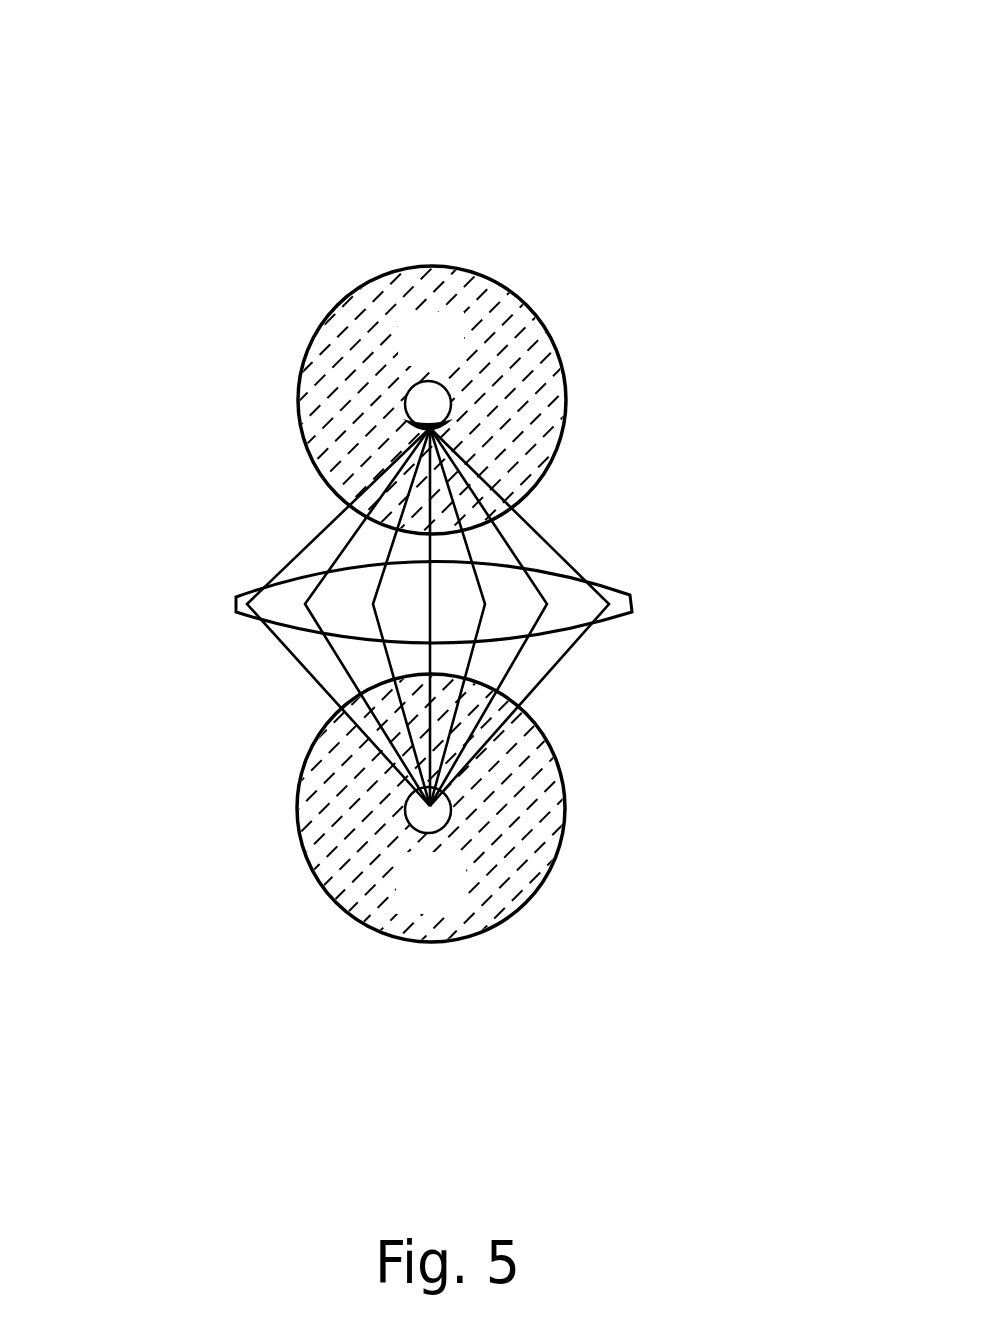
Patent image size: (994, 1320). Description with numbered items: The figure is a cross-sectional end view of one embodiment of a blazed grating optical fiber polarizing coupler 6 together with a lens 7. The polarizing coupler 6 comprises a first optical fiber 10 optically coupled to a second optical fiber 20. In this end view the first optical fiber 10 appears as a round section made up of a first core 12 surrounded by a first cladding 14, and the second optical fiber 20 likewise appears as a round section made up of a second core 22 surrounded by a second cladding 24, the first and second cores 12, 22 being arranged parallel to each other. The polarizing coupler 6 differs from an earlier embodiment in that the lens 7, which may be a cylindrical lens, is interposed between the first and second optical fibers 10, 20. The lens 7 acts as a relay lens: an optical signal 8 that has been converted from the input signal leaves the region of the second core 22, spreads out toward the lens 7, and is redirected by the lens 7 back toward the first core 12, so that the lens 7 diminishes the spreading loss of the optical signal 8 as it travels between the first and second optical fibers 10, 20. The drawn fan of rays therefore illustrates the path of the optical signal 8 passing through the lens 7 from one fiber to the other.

The polarizing coupler 6 is at (282, 118).
The lens 7 is at (632, 613).
The optical signal 8 is at (203, 435).
The first optical fiber 10 is at (431, 895).
The first core 12 is at (440, 815).
The first cladding 14 is at (431, 808).
The second optical fiber 20 is at (432, 318).
The second core 22 is at (436, 402).
The second cladding 24 is at (457, 361).